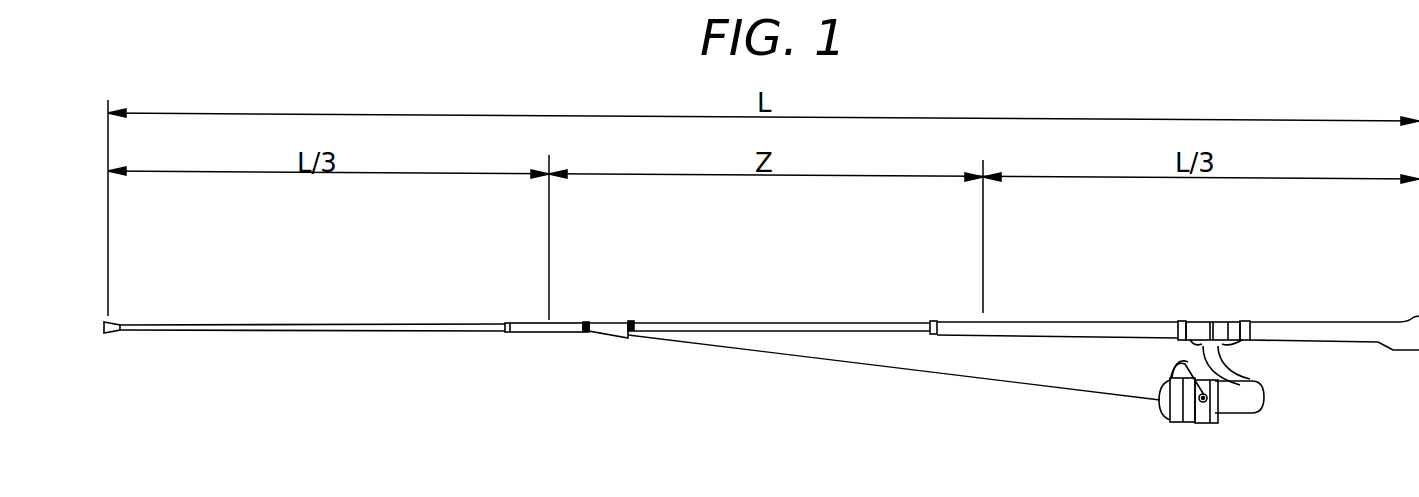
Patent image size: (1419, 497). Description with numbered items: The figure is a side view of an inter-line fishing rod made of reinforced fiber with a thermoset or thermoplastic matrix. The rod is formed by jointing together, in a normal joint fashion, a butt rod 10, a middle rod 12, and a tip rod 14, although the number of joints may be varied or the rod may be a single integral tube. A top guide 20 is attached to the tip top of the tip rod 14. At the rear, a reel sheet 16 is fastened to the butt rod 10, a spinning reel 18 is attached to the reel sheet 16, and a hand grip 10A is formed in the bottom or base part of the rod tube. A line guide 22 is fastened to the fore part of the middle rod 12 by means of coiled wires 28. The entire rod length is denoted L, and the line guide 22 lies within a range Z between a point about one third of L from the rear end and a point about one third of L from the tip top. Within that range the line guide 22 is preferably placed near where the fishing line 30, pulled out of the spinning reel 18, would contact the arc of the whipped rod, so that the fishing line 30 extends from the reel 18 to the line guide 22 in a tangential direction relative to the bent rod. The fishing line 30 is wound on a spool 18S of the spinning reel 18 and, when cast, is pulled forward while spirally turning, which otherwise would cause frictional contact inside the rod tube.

The butt rod 10 is at (1080, 325).
The hand grip 10A is at (1396, 344).
The middle rod 12 is at (816, 328).
The tip rod 14 is at (323, 331).
The reel sheet 16 is at (1228, 325).
The spinning reel 18 is at (1253, 405).
The spool 18S is at (1165, 412).
The top guide 20 is at (118, 334).
The line guide 22 is at (613, 338).
The coiled wires 28 is at (634, 326).
The fishing line 30 is at (1023, 384).